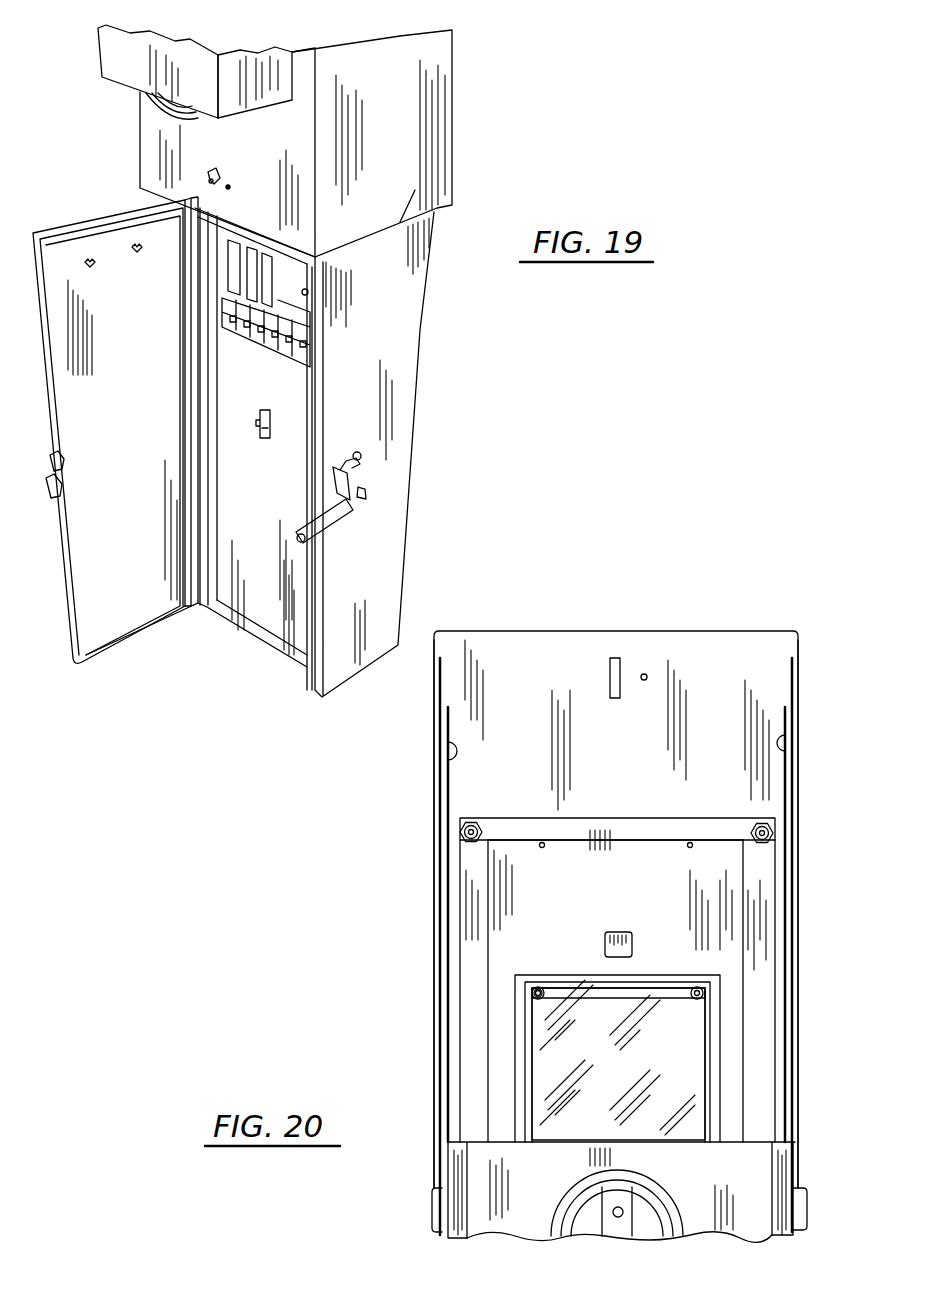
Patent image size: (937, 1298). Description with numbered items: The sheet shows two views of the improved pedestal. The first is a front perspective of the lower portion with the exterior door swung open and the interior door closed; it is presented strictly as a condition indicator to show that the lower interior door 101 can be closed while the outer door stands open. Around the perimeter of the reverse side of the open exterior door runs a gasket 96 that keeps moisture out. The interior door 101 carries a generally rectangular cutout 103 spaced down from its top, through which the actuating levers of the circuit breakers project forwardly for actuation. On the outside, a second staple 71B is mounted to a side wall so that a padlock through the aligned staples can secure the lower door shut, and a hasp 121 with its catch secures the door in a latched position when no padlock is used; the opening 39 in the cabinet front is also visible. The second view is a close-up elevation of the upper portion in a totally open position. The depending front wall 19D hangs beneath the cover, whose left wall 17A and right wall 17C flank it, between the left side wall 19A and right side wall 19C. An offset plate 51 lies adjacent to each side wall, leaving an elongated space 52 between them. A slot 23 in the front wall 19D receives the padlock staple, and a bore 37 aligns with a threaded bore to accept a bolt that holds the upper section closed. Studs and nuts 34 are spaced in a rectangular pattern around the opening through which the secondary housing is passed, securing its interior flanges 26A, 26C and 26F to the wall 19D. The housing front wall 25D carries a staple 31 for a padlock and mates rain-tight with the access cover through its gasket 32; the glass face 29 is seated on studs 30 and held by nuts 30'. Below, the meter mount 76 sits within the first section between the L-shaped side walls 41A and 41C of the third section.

In FIG. 19, the opening in cabinet front 39 is at (160, 113).
In FIG. 19, the gasket 96 is at (110, 223).
In FIG. 19, the rectangular cutout 103 is at (293, 377).
In FIG. 19, the lower interior door 101 is at (283, 485).
In FIG. 19, the hasp 121 is at (345, 473).
In FIG. 19, the second staple 71B is at (320, 533).
In FIG. 20, the depending front wall 19D is at (650, 756).
In FIG. 20, the left side wall 19A is at (442, 1062).
In FIG. 20, the right side wall 19C is at (798, 668).
In FIG. 20, the offset plate 51 is at (455, 745).
In FIG. 20, the elongated space 52 is at (443, 767).
In FIG. 20, the slot 23 is at (613, 658).
In FIG. 20, the bore 37 is at (645, 674).
In FIG. 20, the interior flange 26F is at (577, 827).
In FIG. 20, the interior flange 26A is at (477, 900).
In FIG. 20, the interior flange 26C is at (762, 885).
In FIG. 20, the front wall 25D is at (645, 900).
In FIG. 20, the studs and nuts 34 is at (464, 829).
In FIG. 20, the staple 31 is at (600, 950).
In FIG. 20, the gasket 32 is at (522, 1013).
In FIG. 20, the glass face 29 is at (545, 1083).
In FIG. 20, the stud 30 is at (539, 976).
In FIG. 20, the nut 30' is at (457, 989).
In FIG. 20, the meter mount 76 is at (735, 1180).
In FIG. 20, the L-shaped side wall 41A is at (448, 1165).
In FIG. 20, the L-shaped side wall 41C is at (788, 1158).
In FIG. 20, the left wall 17A is at (433, 1208).
In FIG. 20, the right wall 17C is at (803, 1205).